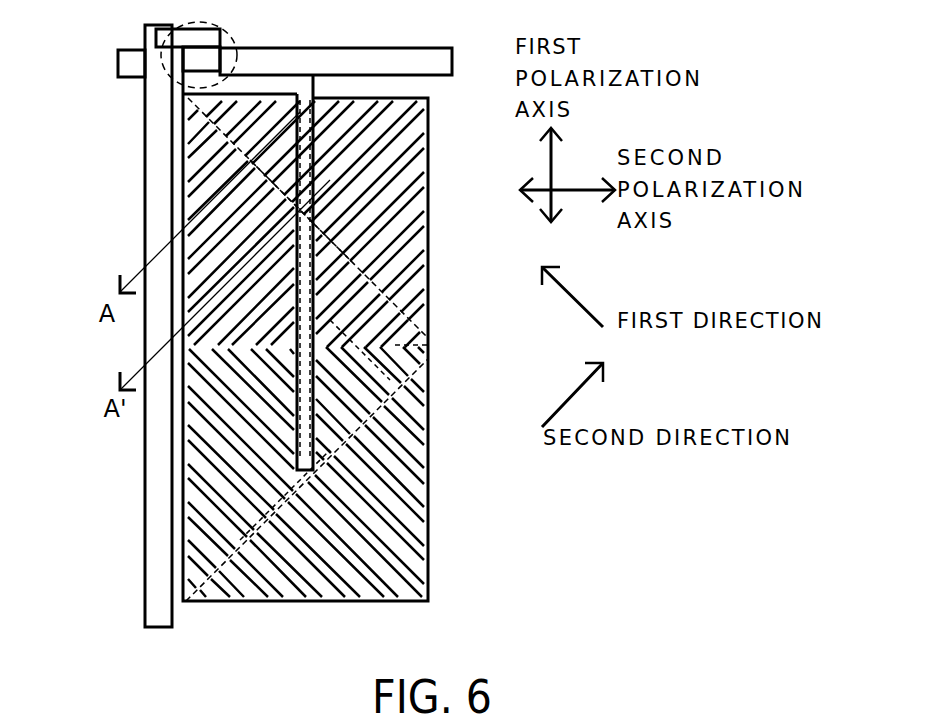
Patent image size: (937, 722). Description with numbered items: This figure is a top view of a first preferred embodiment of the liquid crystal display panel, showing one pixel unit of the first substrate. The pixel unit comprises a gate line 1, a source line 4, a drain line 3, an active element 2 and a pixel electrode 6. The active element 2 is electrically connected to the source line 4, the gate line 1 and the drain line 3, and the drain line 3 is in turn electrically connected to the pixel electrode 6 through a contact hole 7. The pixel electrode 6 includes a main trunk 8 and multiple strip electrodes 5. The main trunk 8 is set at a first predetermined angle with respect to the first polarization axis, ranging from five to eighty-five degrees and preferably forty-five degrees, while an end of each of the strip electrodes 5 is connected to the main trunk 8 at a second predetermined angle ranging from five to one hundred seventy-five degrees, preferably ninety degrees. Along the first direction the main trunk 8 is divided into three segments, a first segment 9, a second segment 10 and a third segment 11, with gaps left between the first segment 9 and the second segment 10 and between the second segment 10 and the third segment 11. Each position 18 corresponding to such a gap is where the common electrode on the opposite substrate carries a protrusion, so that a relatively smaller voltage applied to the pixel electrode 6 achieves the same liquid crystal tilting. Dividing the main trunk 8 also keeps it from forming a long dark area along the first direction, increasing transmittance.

The gate line 1 is at (128, 63).
The active element 2 is at (232, 35).
The drain line 3 is at (305, 86).
The source line 4 is at (152, 177).
The strip electrodes 5 is at (382, 151).
The pixel electrode 6 is at (398, 359).
The contact hole 7 is at (320, 181).
The main trunk 8 is at (405, 329).
The first segment 9 is at (228, 150).
The second segment 10 is at (335, 199).
The third segment 11 is at (400, 289).
The position 18 is at (290, 186).